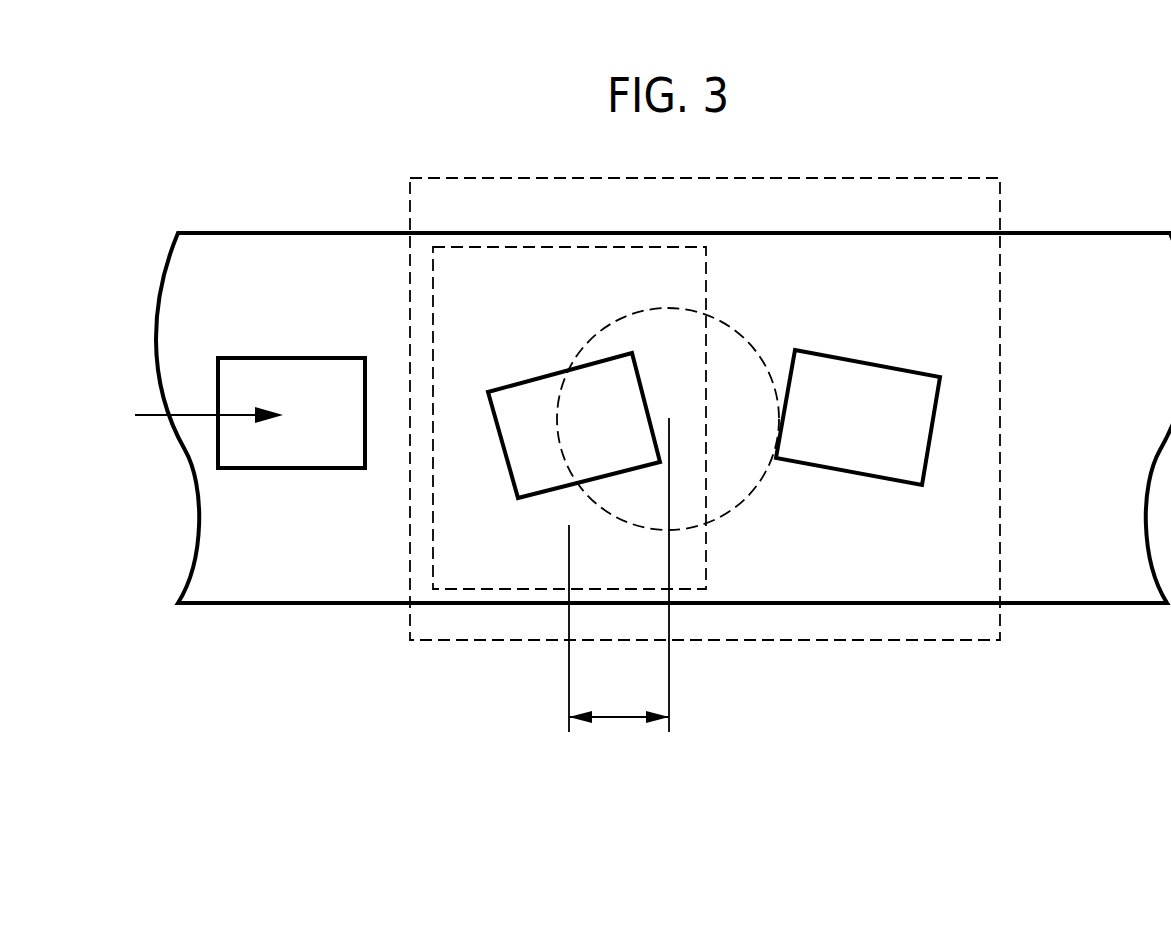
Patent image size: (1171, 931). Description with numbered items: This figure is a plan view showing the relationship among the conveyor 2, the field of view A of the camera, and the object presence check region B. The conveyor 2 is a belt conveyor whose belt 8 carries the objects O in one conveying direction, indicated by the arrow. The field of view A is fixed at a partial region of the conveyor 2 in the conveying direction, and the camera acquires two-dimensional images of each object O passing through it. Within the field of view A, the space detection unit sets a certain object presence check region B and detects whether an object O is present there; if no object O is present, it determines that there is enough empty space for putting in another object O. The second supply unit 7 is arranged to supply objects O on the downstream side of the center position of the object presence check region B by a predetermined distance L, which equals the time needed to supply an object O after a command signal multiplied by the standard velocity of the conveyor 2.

The conveyor 2 is at (1126, 222).
The belt 8 is at (1048, 232).
The second supply unit 7 is at (740, 332).
The object O is at (510, 473).
The field of view A is at (850, 641).
The object presence check region B is at (483, 591).
The predetermined distance L is at (619, 589).